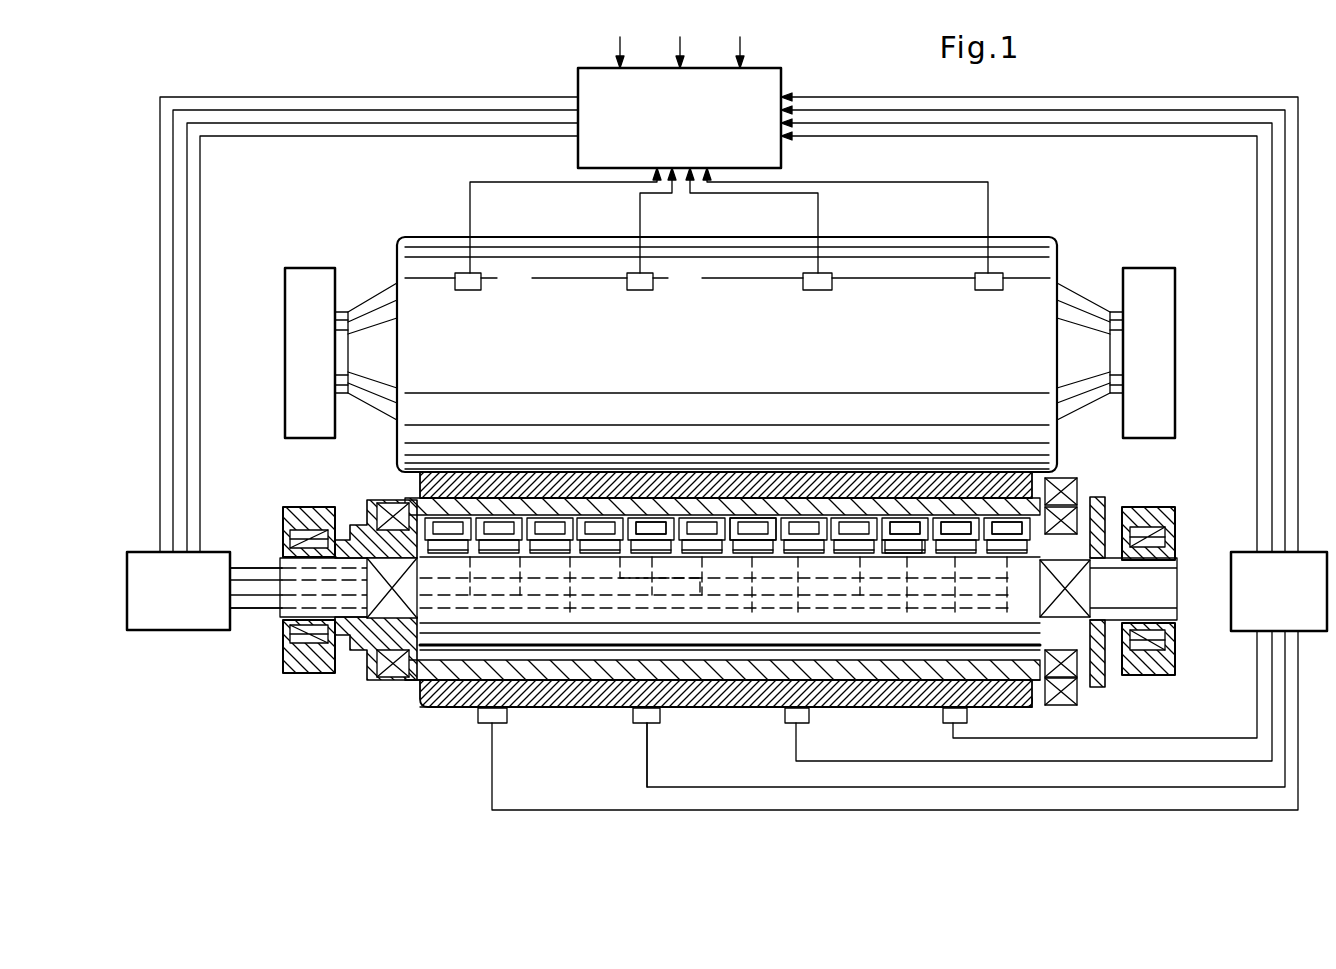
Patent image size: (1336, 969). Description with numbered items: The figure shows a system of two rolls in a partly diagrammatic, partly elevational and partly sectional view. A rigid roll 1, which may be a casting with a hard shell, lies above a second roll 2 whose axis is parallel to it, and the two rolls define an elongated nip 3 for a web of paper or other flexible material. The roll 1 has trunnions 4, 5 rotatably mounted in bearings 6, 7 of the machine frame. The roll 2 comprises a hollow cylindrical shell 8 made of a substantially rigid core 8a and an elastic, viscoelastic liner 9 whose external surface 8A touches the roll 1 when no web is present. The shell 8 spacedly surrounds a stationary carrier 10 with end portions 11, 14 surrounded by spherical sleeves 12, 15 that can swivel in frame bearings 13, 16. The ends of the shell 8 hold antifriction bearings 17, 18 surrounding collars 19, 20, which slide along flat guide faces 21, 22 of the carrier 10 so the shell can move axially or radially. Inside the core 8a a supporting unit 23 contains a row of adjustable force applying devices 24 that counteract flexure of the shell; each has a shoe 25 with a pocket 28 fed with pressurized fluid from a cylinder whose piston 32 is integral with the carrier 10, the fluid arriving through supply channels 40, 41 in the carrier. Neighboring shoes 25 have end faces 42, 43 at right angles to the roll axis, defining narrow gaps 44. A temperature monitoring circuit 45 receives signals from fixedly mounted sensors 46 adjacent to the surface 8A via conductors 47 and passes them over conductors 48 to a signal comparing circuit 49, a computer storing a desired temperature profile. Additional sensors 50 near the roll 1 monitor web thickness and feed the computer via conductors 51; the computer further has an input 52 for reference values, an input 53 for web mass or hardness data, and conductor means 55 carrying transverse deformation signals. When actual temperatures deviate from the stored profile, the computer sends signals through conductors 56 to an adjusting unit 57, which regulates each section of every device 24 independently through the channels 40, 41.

The rigid roll 1 is at (1010, 236).
The second roll 2 is at (433, 709).
The nip 3 is at (518, 470).
The trunnion 4 is at (345, 318).
The trunnion 5 is at (1110, 318).
The bearing 6 is at (310, 277).
The bearing 7 is at (1148, 280).
The shell 8 is at (528, 710).
The core 8a is at (468, 710).
The external surface 8A is at (1005, 710).
The elastic liner 9 is at (560, 710).
The carrier 10 is at (435, 635).
The end portion 11 is at (285, 616).
The spherical sleeve 12 is at (300, 642).
The bearing 13 is at (310, 670).
The end portion 14 is at (1165, 590).
The spherical sleeve 15 is at (1165, 630).
The bearing 16 is at (1155, 663).
The antifriction bearing 17 is at (392, 500).
The antifriction bearing 18 is at (1078, 508).
The collar 19 is at (372, 525).
The collar 20 is at (1100, 520).
The guide face 21 is at (385, 605).
The guide face 22 is at (1078, 586).
The supporting unit 23 is at (710, 522).
The force applying device 24 is at (850, 525).
The shoe 25 is at (905, 525).
The pocket 28 is at (657, 525).
The piston 32 is at (632, 560).
The supply channel 40 is at (255, 580).
The supply channel 41 is at (256, 588).
The end face 42 is at (882, 525).
The end face 43 is at (950, 525).
The gap 44 is at (990, 525).
The temperature monitoring circuit 45 is at (1312, 633).
The sensor 46 is at (662, 716).
The conductor 47 is at (647, 763).
The conductor 48 is at (1298, 442).
The signal comparing circuit 49 is at (770, 76).
The sensor 50 is at (482, 285).
The conductor 51 is at (577, 183).
The input 52 is at (620, 47).
The input 53 is at (683, 47).
The conductor means 55 is at (743, 47).
The conductor 56 is at (322, 96).
The adjusting unit 57 is at (141, 563).